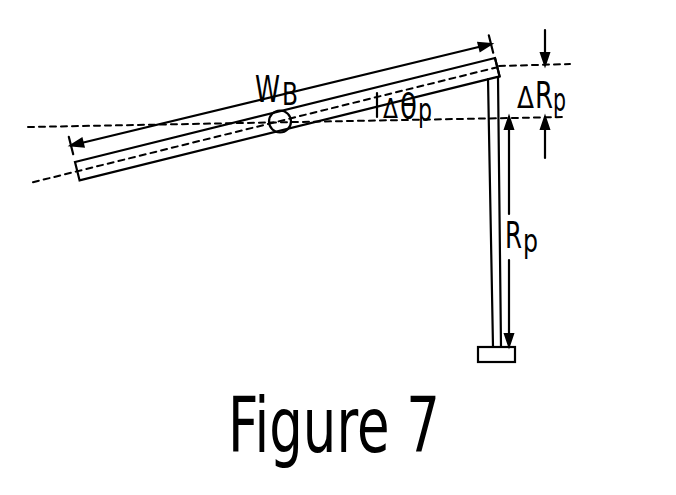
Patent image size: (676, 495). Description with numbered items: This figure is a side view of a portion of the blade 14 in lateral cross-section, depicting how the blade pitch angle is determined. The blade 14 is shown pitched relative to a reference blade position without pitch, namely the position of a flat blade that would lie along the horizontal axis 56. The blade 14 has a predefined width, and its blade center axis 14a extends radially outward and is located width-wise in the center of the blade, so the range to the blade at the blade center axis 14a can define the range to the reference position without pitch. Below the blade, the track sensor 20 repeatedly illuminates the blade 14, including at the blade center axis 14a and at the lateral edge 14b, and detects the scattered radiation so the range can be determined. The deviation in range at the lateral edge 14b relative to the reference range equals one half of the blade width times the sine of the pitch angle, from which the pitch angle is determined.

The blade 14 is at (138, 166).
The blade center axis 14a is at (287, 132).
The lateral edge of the blade 14b is at (500, 66).
The track sensor 20 is at (515, 355).
The horizontal axis 56 is at (83, 126).